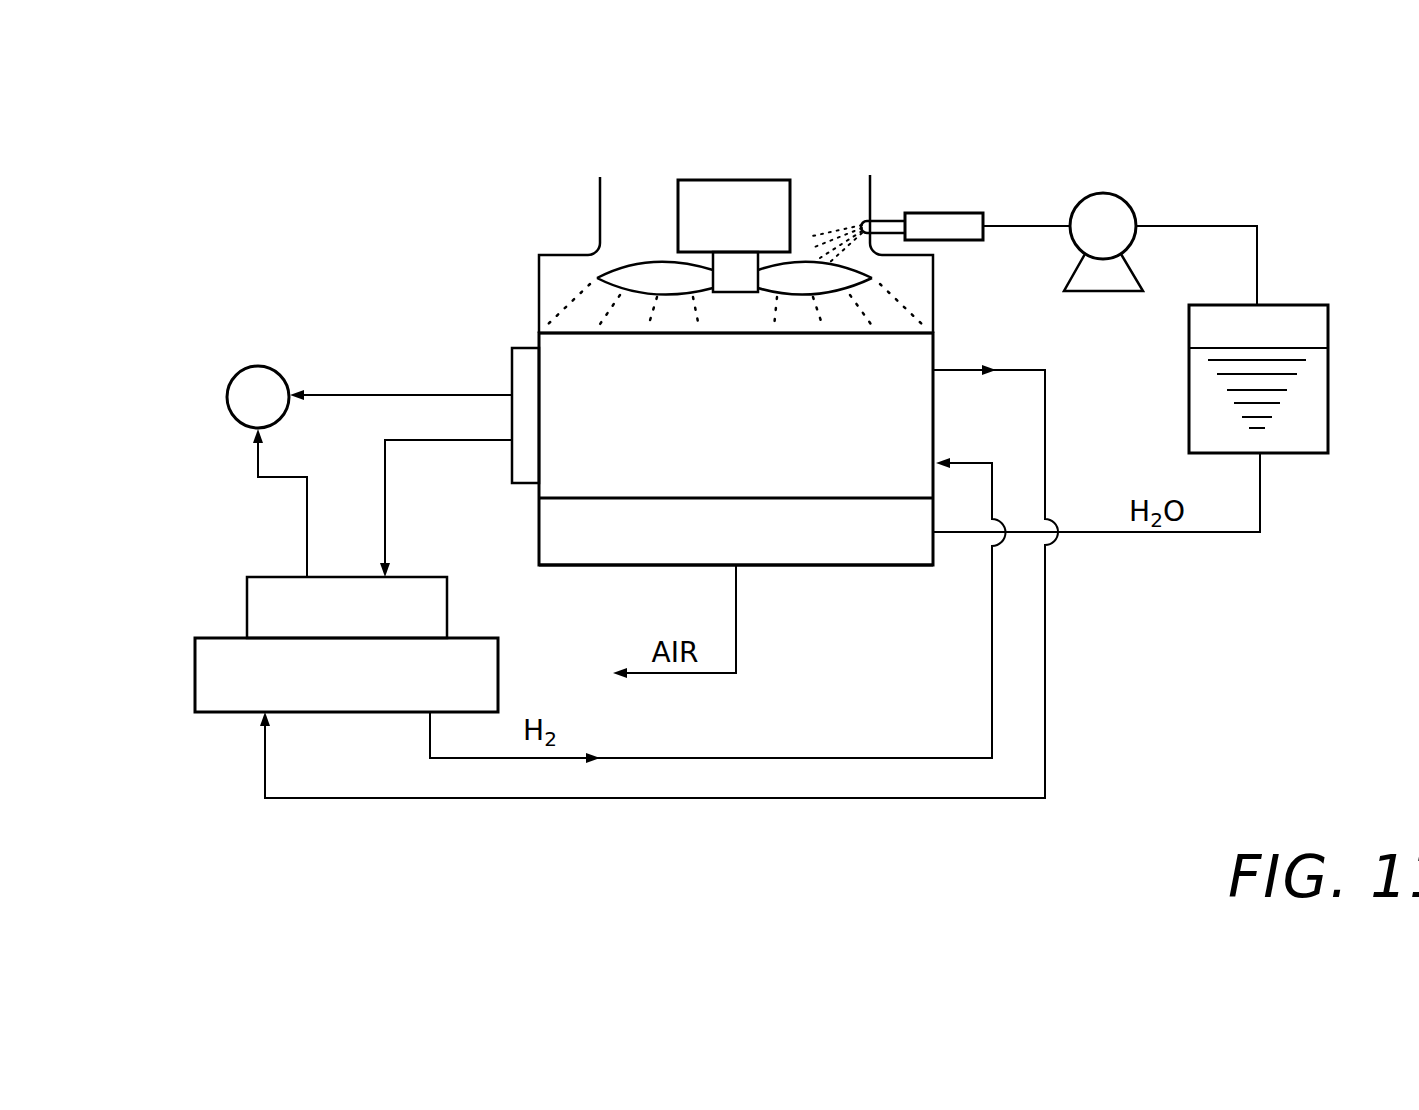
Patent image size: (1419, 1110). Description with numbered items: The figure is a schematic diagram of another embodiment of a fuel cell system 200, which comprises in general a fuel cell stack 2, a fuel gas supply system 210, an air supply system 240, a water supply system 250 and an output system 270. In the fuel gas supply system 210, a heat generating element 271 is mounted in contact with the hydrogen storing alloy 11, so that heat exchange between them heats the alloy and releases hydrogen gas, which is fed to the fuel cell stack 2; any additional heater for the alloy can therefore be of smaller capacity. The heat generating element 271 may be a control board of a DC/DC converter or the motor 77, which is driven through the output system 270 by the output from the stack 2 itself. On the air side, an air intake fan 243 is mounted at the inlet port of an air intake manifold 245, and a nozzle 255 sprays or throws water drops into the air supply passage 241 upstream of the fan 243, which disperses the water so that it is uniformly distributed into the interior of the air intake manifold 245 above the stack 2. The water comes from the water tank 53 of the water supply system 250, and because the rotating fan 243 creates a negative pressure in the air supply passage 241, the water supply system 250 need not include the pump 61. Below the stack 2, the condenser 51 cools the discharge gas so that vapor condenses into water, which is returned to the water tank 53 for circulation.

The fuel cell stack 2 is at (853, 392).
The condenser 51 is at (873, 565).
The air supply system 240 is at (725, 202).
The air intake manifold 245 is at (552, 255).
The air supply passage 241 is at (871, 190).
The air intake fan 243 is at (695, 180).
The nozzle 255 is at (960, 213).
The pump 61 is at (1130, 207).
The fuel cell system 200 is at (1240, 178).
The water supply system 250 is at (1304, 362).
The water tank 53 is at (1296, 455).
The motor 77 is at (231, 381).
The output system 270 is at (348, 366).
The heat generating element 271 is at (415, 577).
The hydrogen storing alloy 11 is at (480, 638).
The fuel gas supply system 210 is at (748, 820).